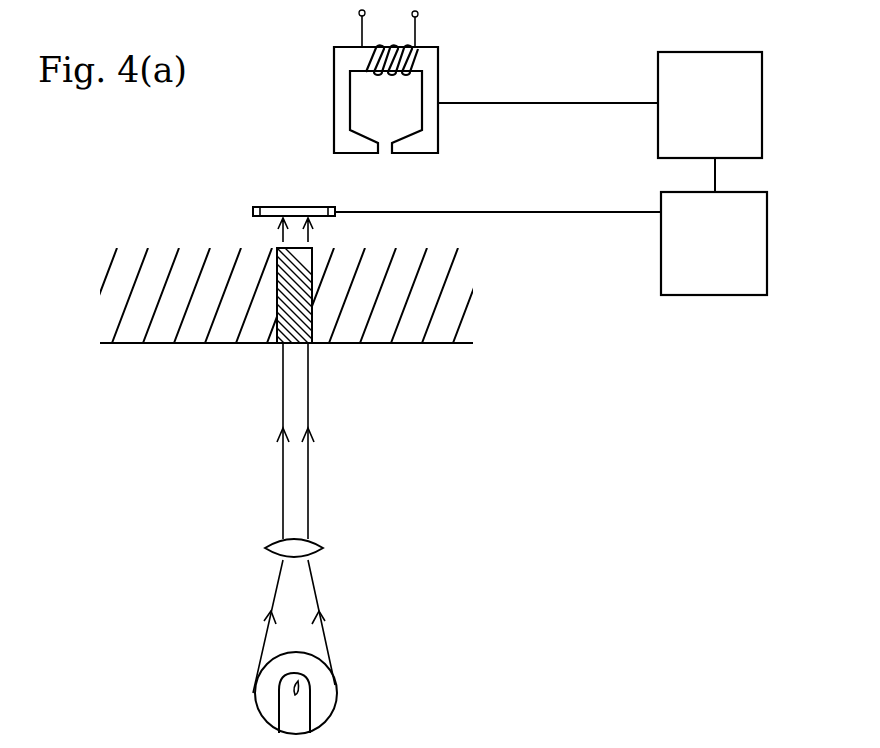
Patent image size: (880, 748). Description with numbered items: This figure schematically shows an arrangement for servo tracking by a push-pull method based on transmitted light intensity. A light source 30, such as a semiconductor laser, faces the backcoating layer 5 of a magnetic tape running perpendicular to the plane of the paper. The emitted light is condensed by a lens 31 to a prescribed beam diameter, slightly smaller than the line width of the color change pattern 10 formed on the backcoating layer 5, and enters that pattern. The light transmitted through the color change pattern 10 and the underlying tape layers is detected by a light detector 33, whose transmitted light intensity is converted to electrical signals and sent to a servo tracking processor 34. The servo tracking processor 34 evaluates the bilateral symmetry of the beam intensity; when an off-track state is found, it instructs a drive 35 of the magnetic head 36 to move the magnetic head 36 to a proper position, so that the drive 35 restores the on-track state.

The backcoating layer 5 is at (440, 300).
The color change pattern 10 is at (310, 344).
The light source 30 is at (338, 690).
The lens 31 is at (323, 548).
The light detector 33 is at (293, 207).
The servo tracking processor 34 is at (767, 238).
The drive 35 is at (762, 93).
The magnetic head 36 is at (438, 70).